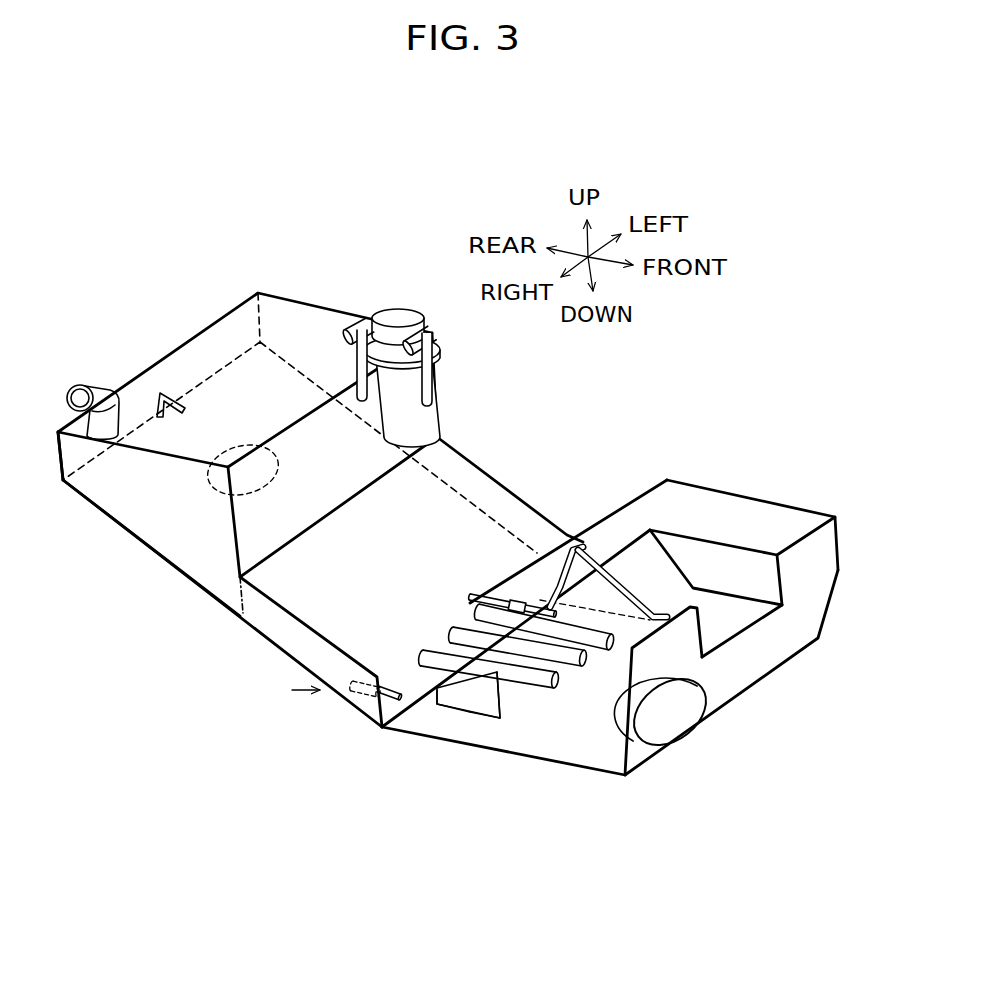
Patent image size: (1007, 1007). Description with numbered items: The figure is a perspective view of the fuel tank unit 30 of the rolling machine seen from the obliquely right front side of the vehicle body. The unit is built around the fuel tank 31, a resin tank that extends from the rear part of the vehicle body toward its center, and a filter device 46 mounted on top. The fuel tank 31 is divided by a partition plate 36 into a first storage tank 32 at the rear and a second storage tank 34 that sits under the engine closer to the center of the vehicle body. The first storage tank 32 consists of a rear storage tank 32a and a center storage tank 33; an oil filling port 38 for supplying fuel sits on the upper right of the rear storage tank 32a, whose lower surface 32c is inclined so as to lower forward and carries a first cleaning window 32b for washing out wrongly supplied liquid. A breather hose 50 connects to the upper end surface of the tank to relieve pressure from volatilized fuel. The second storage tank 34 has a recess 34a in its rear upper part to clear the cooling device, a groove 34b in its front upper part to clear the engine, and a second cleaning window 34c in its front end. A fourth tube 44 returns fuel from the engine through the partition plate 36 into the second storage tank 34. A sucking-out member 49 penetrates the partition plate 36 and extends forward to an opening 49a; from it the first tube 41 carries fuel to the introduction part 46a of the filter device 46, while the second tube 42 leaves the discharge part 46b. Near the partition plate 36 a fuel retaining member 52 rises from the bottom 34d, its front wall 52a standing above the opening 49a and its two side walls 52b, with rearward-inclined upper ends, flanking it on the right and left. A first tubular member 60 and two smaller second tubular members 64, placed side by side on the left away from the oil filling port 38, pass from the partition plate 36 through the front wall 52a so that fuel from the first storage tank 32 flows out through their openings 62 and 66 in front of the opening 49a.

The fuel tank unit 30 is at (740, 340).
The fuel tank 31 is at (698, 458).
The first storage tank 32 is at (118, 530).
The rear storage tank 32a is at (185, 578).
The first cleaning window 32b is at (222, 482).
The lower surface 32c is at (202, 590).
The center storage tank 33 is at (272, 627).
The second storage tank 34 is at (750, 690).
The recess 34a is at (564, 548).
The groove 34b is at (723, 568).
The second cleaning window 34c is at (666, 737).
The bottom 34d is at (596, 748).
The partition plate 36 is at (413, 675).
The oil filling port 38 is at (79, 387).
The first tube 41 is at (437, 380).
The second tube 42 is at (362, 368).
The fourth tube 44 is at (357, 697).
The filter device 46 is at (392, 305).
The introduction part 46a is at (437, 327).
The discharge part 46b is at (343, 313).
The sucking-out member 49 is at (540, 602).
The opening 49a is at (617, 610).
The breather hose 50 is at (180, 397).
The fuel retaining member 52 is at (527, 780).
The front wall 52a is at (513, 713).
The side walls 52b is at (473, 703).
The first tubular member 60 is at (433, 640).
The opening 62 is at (520, 688).
The second tubular members 64 is at (460, 612).
The opening 66 is at (612, 645).